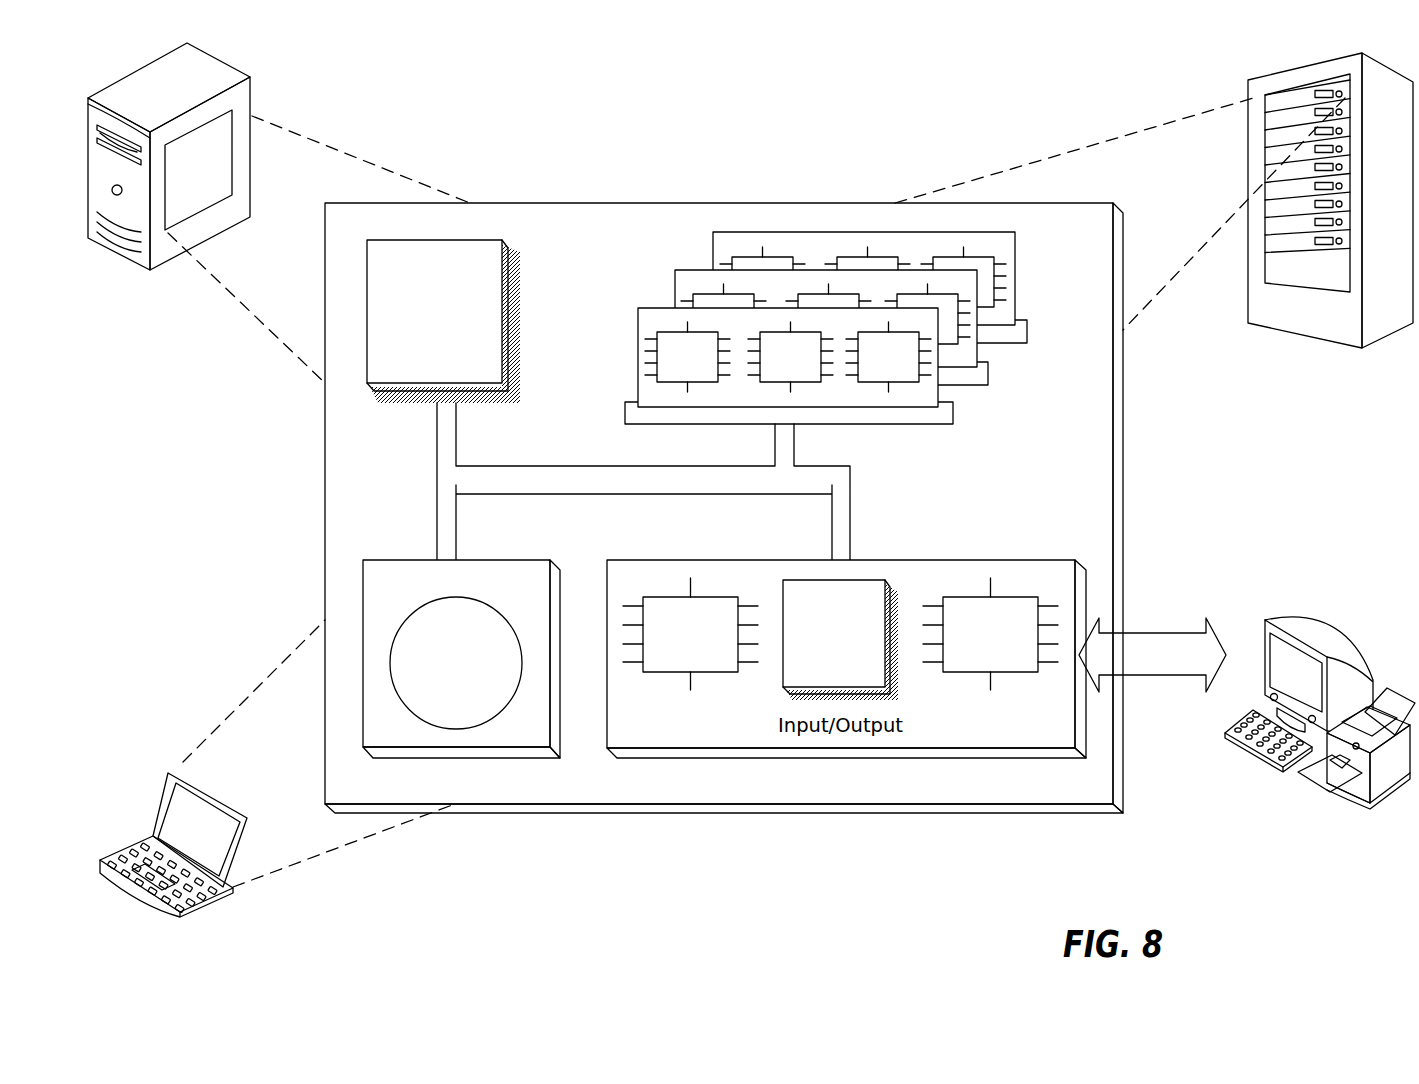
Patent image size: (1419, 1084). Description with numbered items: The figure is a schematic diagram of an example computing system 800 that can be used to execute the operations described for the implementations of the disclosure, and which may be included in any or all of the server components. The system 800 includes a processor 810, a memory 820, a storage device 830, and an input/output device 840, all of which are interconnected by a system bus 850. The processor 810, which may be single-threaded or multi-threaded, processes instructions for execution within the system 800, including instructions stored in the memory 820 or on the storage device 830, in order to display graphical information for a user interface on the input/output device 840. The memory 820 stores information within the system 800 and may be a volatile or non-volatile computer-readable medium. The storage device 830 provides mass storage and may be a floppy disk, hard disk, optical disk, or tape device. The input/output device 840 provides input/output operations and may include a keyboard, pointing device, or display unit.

The computing system 800 is at (537, 118).
The processor 810 is at (490, 377).
The memory 820 is at (1024, 386).
The storage device 830 is at (538, 739).
The input/output device 840 is at (1265, 623).
The system bus 850 is at (638, 485).